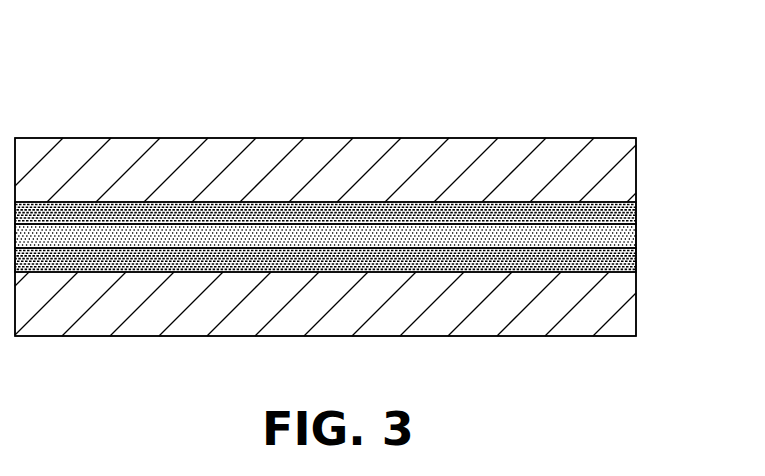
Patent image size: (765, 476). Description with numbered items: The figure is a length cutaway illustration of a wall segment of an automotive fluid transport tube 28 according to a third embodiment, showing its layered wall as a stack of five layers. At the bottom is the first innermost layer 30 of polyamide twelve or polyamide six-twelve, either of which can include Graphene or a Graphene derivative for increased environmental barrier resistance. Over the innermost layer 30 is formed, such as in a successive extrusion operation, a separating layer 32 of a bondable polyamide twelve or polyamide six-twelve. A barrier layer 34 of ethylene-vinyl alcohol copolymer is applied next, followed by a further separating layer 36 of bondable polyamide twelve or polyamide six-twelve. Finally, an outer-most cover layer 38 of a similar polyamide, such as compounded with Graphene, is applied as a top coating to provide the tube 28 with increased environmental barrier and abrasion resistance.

The automotive fluid transport tube 28 is at (531, 75).
The first innermost layer 30 is at (646, 305).
The separating layer 32 is at (646, 262).
The barrier layer 34 is at (646, 240).
The further separating layer 36 is at (646, 217).
The outer-most cover layer 38 is at (646, 168).